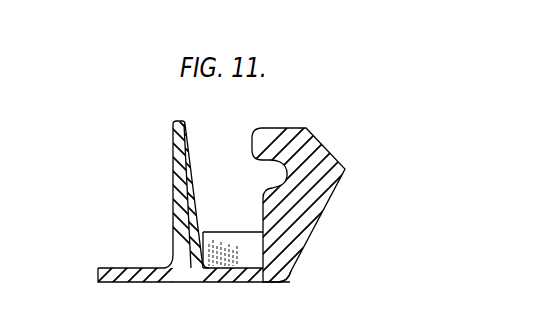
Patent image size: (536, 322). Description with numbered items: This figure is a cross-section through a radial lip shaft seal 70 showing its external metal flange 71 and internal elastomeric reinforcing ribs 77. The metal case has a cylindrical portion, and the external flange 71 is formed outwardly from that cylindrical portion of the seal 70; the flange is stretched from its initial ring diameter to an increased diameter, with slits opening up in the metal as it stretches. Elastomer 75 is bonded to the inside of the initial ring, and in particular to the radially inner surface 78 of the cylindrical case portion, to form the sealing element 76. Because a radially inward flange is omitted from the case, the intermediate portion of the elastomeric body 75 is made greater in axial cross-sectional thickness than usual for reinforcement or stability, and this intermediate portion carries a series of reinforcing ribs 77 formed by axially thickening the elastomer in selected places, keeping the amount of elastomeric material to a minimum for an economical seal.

The radial lip shaft seal 70 is at (172, 188).
The external flange 71 is at (117, 268).
The elastomer 75 is at (300, 284).
The sealing element 76 is at (347, 170).
The reinforcing ribs 77 is at (243, 243).
The radially inner surface 78 is at (190, 164).